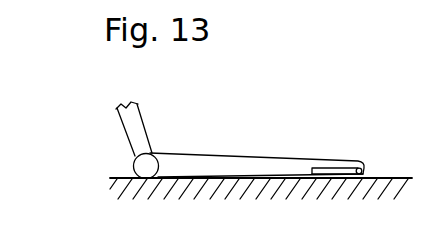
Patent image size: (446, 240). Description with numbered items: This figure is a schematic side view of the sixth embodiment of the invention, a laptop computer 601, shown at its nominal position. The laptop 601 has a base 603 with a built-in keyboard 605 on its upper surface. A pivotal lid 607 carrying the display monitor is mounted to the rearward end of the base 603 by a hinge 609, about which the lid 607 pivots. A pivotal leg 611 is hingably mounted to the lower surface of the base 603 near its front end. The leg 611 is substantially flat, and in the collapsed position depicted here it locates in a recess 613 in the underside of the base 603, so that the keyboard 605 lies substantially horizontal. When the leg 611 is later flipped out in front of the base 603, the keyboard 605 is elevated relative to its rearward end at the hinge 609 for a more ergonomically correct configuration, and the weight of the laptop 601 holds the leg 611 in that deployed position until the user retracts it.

The laptop computer 601 is at (310, 110).
The base 603 is at (233, 178).
The keyboard 605 is at (212, 153).
The pivotal lid 607 is at (130, 143).
The hinge 609 is at (151, 158).
The pivotal leg 611 is at (345, 180).
The recess 613 is at (344, 166).